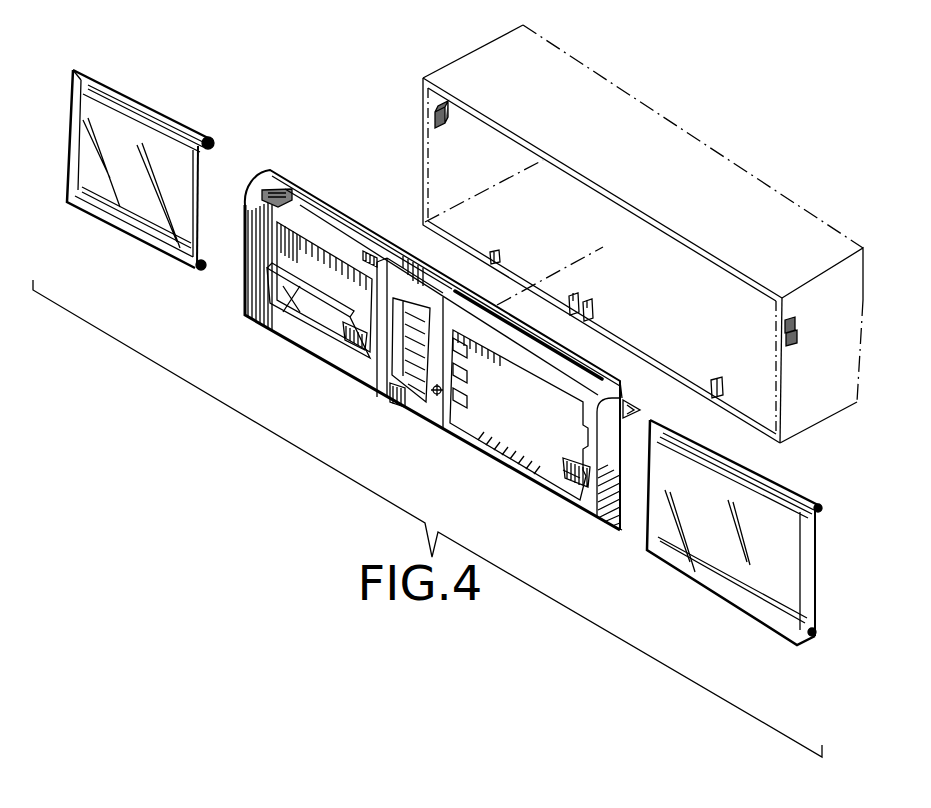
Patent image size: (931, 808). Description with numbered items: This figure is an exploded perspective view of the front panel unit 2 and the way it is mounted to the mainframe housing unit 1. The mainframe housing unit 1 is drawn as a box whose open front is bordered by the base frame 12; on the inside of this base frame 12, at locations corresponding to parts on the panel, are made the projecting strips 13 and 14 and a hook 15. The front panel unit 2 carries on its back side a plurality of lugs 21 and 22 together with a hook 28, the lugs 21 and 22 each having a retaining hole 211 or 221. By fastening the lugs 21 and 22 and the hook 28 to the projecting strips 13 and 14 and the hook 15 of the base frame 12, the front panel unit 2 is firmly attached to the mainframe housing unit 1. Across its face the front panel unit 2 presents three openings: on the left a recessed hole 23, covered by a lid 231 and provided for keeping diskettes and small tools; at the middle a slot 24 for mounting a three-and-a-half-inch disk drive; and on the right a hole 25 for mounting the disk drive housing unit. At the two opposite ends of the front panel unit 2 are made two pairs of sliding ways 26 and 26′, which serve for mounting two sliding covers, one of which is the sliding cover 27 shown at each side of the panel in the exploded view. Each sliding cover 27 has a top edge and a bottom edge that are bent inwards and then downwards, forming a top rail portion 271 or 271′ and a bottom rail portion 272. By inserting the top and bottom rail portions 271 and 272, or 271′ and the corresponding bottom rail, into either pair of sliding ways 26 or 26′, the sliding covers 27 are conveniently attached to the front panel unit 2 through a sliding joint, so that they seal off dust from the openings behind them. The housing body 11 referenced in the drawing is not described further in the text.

The mainframe housing unit 1 is at (440, 67).
The front panel unit 2 is at (345, 110).
The casing body 11 is at (708, 152).
The base frame 12 is at (423, 138).
The projecting strip 13 is at (497, 248).
The projecting strip 14 is at (448, 128).
The hook 15 is at (578, 300).
The lug 21 is at (346, 352).
The lug 22 is at (287, 188).
The recessed hole 23 is at (325, 283).
The slot 24 is at (397, 405).
The hole 25 is at (533, 433).
The sliding ways 26 is at (397, 238).
The sliding ways 26′ is at (612, 528).
The sliding cover 27 is at (140, 243).
The hook 28 is at (443, 422).
The retaining hole 211 is at (367, 255).
The retaining hole 221 is at (292, 196).
The lid 231 is at (327, 328).
The top rail portion 271 is at (818, 505).
The top rail portion 271′ is at (217, 143).
The bottom rail portion 272 is at (201, 270).